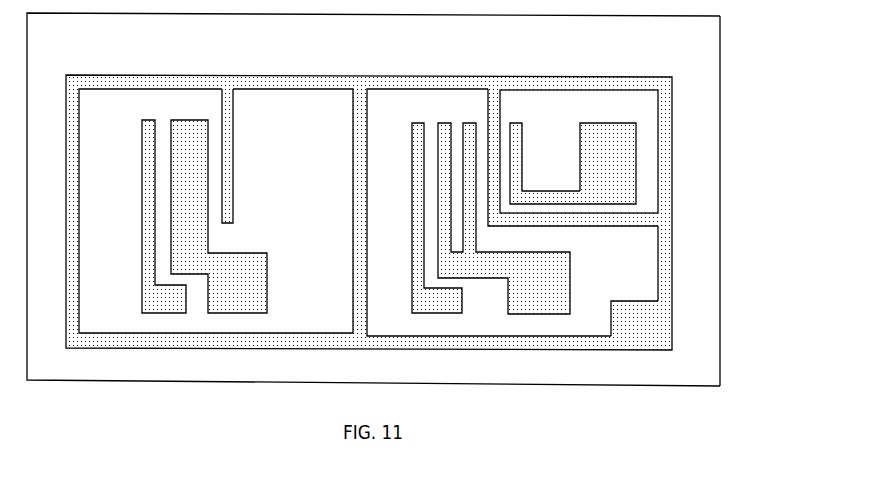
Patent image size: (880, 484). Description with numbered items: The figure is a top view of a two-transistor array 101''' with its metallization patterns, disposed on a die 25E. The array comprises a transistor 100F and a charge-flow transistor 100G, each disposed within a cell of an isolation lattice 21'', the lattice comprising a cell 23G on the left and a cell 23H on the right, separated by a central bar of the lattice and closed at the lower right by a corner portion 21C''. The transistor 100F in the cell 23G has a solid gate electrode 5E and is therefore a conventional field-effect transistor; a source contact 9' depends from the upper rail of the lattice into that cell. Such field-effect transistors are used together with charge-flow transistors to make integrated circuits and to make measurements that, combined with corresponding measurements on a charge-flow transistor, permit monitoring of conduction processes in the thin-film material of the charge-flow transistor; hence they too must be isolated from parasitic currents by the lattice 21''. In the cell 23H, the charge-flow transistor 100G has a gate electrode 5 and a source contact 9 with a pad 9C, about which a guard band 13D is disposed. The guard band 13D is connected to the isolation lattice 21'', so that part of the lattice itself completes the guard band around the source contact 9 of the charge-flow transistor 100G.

The gate electrode 5 is at (544, 299).
The solid gate electrode 5E is at (182, 120).
The source contact 9 is at (545, 155).
The source contact 9' is at (250, 156).
The source contact pad 9C is at (620, 172).
The guard band 13D is at (500, 108).
The isolation lattice 21'' is at (416, 203).
The corner portion of isolation lattice 21C'' is at (697, 319).
The cell 23G is at (326, 250).
The cell 23H is at (633, 273).
The die 25E is at (730, 249).
The transistor 100F is at (194, 240).
The charge-flow transistor 100G is at (575, 244).
The two-transistor array 101''' is at (406, 199).